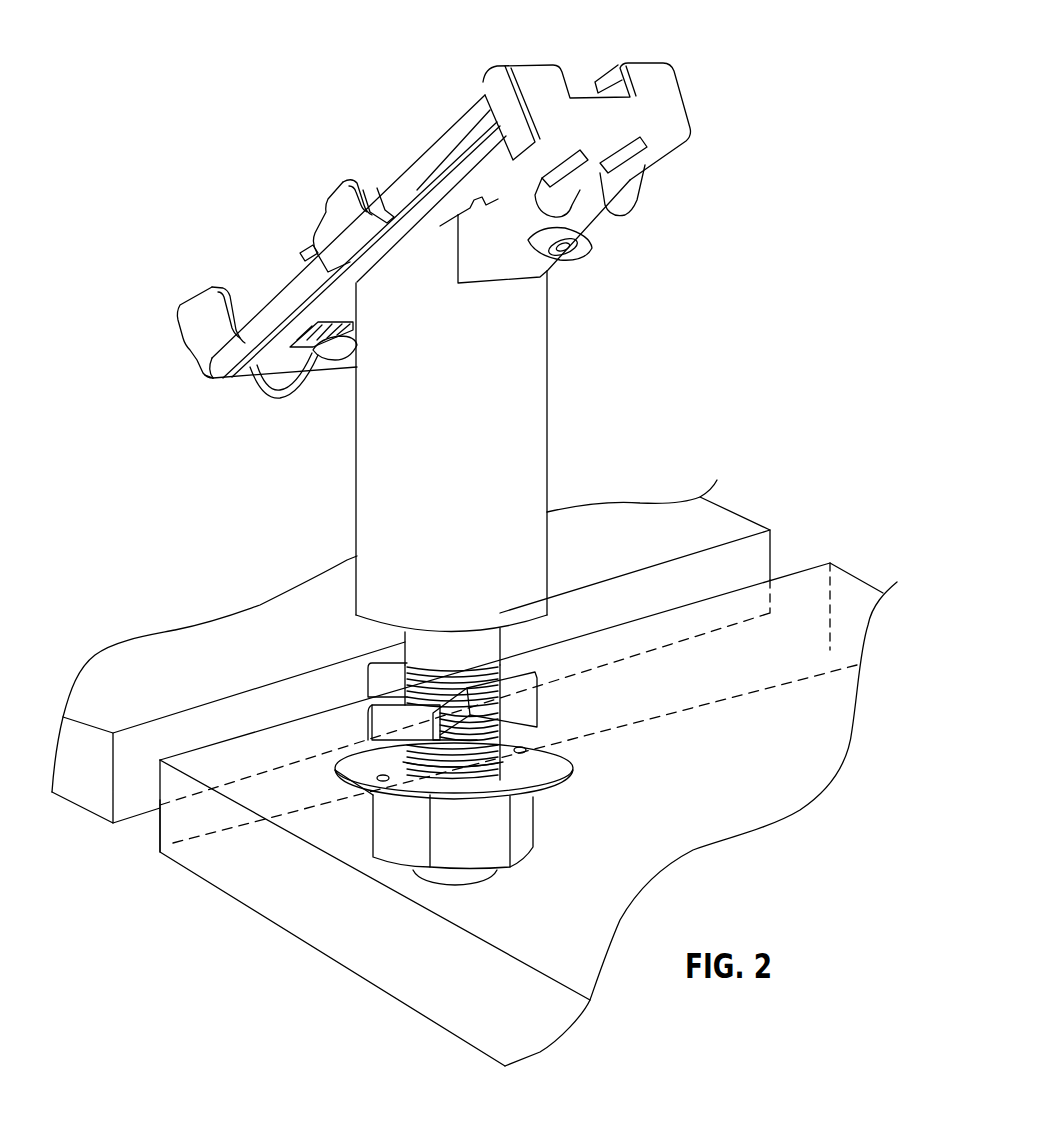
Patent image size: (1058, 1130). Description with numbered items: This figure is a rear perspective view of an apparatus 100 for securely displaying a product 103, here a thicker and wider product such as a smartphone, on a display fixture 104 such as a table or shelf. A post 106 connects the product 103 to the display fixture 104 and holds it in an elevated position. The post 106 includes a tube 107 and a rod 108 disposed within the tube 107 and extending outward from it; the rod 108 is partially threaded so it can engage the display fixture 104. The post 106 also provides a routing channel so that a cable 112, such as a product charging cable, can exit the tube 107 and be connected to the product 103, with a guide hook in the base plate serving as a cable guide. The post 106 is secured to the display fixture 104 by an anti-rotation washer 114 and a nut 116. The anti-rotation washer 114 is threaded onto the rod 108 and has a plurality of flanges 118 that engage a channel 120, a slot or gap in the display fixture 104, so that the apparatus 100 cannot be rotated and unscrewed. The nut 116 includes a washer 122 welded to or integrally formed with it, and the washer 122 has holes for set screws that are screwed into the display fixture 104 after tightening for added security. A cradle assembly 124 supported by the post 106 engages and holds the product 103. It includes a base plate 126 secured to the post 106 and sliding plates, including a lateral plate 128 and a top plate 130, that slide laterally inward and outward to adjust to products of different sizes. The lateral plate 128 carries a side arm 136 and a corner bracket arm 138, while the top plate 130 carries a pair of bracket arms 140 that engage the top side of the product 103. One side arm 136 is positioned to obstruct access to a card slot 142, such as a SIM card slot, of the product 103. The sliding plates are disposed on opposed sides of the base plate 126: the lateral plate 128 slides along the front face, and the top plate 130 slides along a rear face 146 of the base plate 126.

The apparatus 100 is at (752, 48).
The product 103 is at (458, 112).
The display fixture 104 is at (270, 867).
The post 106 is at (497, 406).
The tube 107 is at (535, 383).
The rod 108 is at (497, 632).
The cable 112 is at (295, 403).
The anti-rotation washer 114 is at (540, 687).
The nut 116 is at (543, 799).
The flanges 118 is at (370, 682).
The channel 120 is at (138, 834).
The washer 122 is at (370, 793).
The cradle assembly 124 is at (628, 108).
The base plate 126 is at (210, 383).
The lateral plate 128 is at (413, 185).
The top plate 130 is at (658, 143).
The side arm 136 is at (290, 224).
The corner bracket arm 138 is at (190, 303).
The bracket arms 140 is at (537, 77).
The card slot 142 is at (303, 250).
The rear face 146 is at (253, 363).